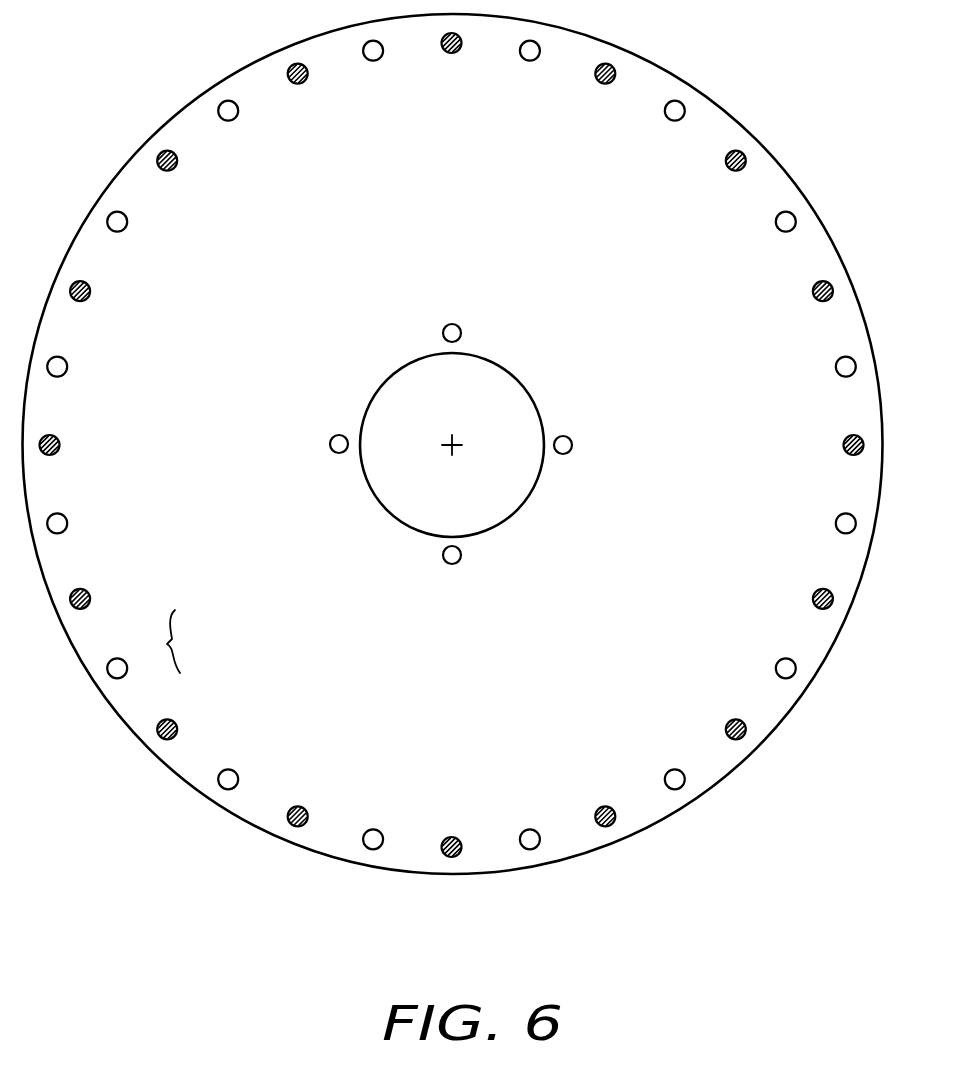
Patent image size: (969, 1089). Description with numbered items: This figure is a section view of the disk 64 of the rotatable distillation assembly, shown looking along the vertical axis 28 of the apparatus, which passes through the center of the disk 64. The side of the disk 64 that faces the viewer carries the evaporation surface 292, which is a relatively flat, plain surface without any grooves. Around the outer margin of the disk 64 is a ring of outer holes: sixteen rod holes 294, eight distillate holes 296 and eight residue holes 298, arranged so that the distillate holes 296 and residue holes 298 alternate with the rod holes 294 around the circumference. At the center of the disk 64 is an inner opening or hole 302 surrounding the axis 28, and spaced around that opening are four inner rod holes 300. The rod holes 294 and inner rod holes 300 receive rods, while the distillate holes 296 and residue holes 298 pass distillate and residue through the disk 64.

The vertical axis 28 is at (456, 449).
The disk 64 is at (188, 783).
The evaporation surface 292 is at (172, 643).
The rod holes 294 is at (374, 852).
The distillate holes 296 is at (455, 860).
The residue holes 298 is at (294, 829).
The inner rod holes 300 is at (452, 565).
The inner opening 302 is at (532, 496).